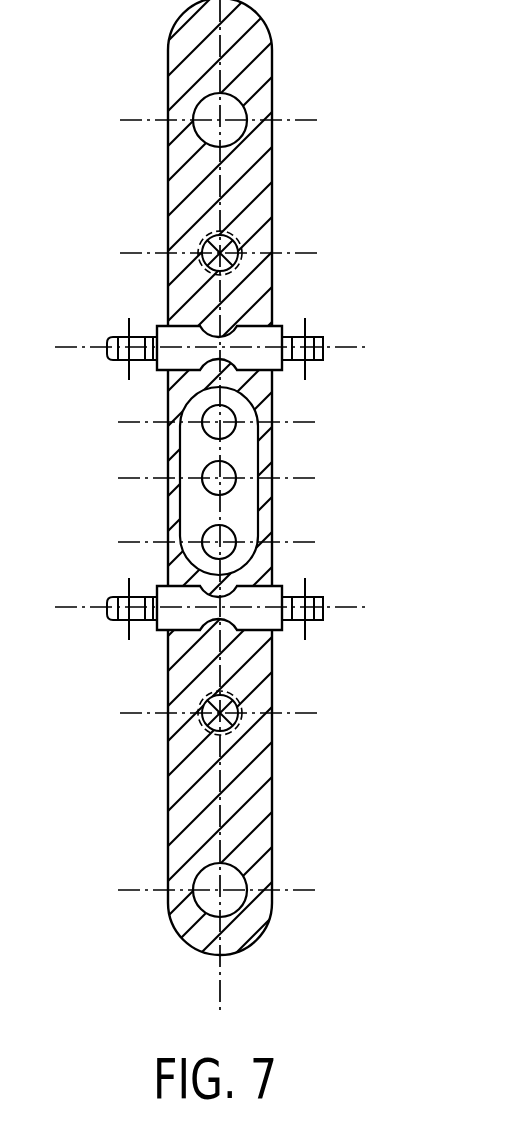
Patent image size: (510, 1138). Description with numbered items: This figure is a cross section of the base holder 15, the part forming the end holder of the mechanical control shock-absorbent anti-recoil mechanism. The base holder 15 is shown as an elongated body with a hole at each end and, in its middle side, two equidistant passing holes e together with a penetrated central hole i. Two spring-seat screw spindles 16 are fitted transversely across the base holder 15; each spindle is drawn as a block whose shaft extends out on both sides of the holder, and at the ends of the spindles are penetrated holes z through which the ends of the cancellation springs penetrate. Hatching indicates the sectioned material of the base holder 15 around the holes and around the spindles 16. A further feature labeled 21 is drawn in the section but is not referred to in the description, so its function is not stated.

The base holder 15 is at (267, 98).
The spring-seat screw spindles 16 is at (230, 474).
The threaded bore 21 is at (200, 728).
The passing holes e is at (234, 415).
The central hole i is at (201, 468).
The penetrated holes z is at (305, 598).